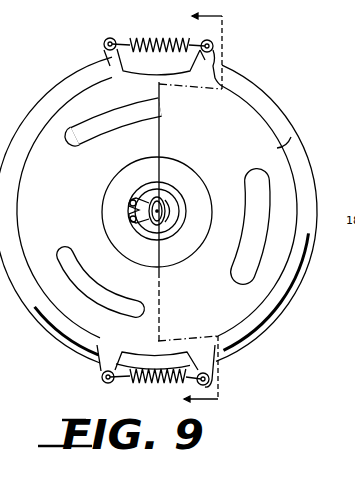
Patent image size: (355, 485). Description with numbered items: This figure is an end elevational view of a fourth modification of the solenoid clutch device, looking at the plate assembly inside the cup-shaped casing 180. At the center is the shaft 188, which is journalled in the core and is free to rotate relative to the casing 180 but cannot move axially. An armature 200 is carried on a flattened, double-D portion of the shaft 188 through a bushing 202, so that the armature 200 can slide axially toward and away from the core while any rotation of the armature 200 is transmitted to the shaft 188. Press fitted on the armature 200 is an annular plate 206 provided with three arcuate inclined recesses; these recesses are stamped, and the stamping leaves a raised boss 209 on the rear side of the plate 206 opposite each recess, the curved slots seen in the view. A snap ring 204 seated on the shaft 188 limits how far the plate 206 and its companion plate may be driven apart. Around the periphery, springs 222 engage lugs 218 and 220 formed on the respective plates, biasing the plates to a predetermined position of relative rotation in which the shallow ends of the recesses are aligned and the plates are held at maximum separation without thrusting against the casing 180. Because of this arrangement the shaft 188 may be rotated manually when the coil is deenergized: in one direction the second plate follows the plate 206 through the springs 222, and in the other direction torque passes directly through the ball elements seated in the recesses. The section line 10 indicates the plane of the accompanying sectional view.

The section line 10 is at (190, 209).
The casing 180 is at (269, 103).
The shaft 188 is at (147, 236).
The armature 200 is at (104, 212).
The bushing 202 is at (186, 211).
The snap ring 204 is at (173, 195).
The annular plate 206 is at (291, 137).
The raised boss 209 is at (83, 143).
The lug 218 is at (217, 65).
The lug 220 is at (104, 45).
The springs 222 is at (160, 34).